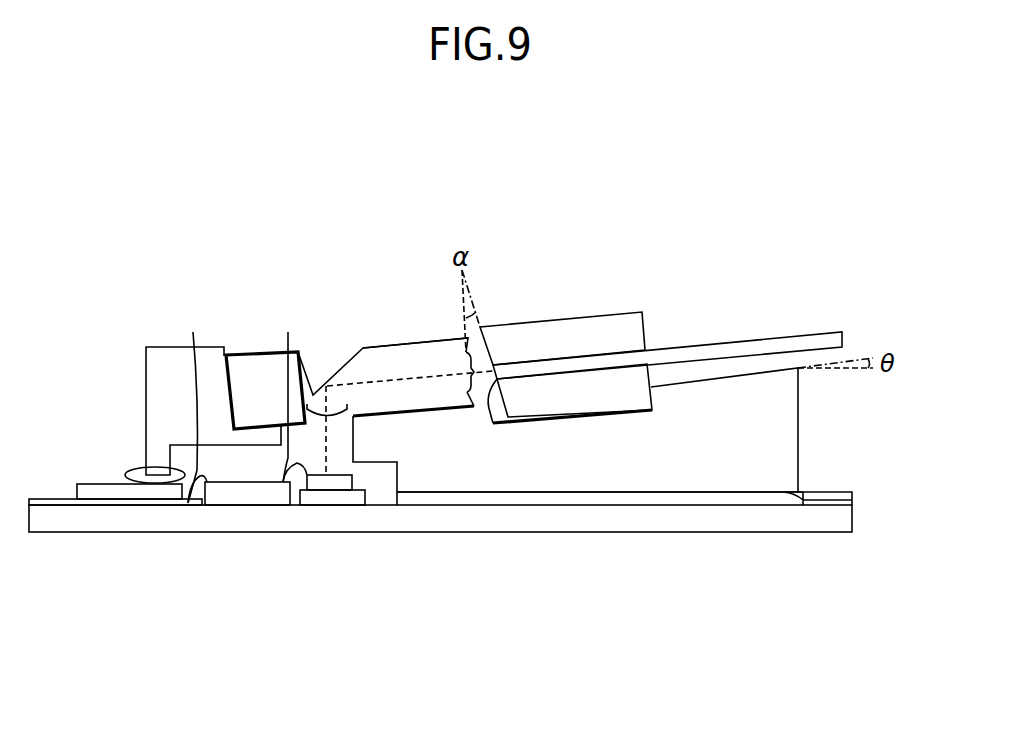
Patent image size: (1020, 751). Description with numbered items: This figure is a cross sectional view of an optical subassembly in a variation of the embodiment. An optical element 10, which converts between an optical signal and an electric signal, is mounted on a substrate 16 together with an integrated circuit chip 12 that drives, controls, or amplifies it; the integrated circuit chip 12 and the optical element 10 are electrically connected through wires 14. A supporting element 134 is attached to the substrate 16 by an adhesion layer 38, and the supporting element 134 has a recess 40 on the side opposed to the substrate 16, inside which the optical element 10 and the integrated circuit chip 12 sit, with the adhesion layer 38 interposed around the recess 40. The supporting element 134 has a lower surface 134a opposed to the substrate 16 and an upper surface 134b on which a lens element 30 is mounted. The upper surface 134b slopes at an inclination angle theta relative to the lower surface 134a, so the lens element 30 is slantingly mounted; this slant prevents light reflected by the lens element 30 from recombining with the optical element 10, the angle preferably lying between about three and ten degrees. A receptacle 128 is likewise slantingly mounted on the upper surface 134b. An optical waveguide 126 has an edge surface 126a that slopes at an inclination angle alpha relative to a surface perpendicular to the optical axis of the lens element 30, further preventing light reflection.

The optical element 10 is at (332, 480).
The integrated circuit chip 12 is at (235, 493).
The wires 14 is at (241, 401).
The substrate 16 is at (850, 523).
The lens element 30 is at (246, 362).
The adhesion layer 38 is at (148, 478).
The recess 40 is at (196, 528).
The optical waveguide 126 is at (755, 340).
The edge surface 126a is at (490, 382).
The receptacle 128 is at (568, 322).
The supporting element 134 is at (790, 422).
The lower surface 134a is at (697, 495).
The upper surface 134b is at (423, 410).